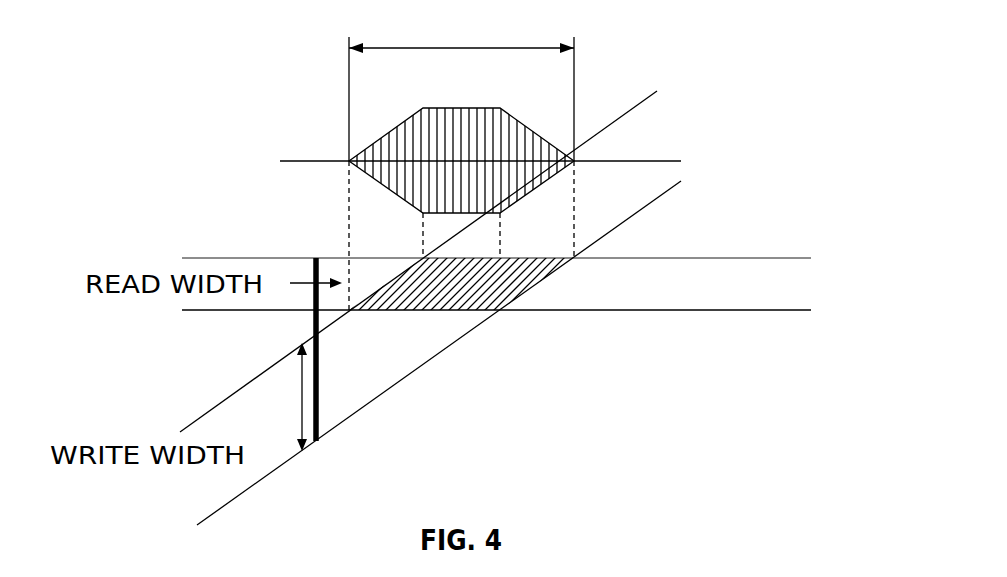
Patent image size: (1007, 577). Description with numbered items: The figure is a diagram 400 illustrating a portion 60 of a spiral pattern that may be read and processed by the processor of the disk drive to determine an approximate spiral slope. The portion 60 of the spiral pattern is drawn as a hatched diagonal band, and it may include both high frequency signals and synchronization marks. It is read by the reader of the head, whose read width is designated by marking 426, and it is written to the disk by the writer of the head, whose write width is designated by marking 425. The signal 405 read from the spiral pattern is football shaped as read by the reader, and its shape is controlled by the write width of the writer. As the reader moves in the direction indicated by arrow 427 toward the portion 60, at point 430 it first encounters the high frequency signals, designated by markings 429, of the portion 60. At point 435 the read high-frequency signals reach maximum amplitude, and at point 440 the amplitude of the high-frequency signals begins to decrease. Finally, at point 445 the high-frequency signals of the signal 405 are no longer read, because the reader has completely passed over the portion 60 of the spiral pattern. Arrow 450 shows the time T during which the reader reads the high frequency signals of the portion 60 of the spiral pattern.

The diagram of write pulse and read/write widths 400 is at (786, 70).
The signal 405 is at (477, 108).
The high frequency signals 429 is at (437, 120).
The point 435 is at (423, 258).
The arrow 450 is at (482, 48).
The marking 426 is at (313, 270).
The arrow 427 is at (295, 288).
The point 430 is at (350, 312).
The point 440 is at (500, 312).
The point 445 is at (574, 260).
The portion of spiral pattern 60 is at (459, 322).
The marking 425 is at (318, 428).